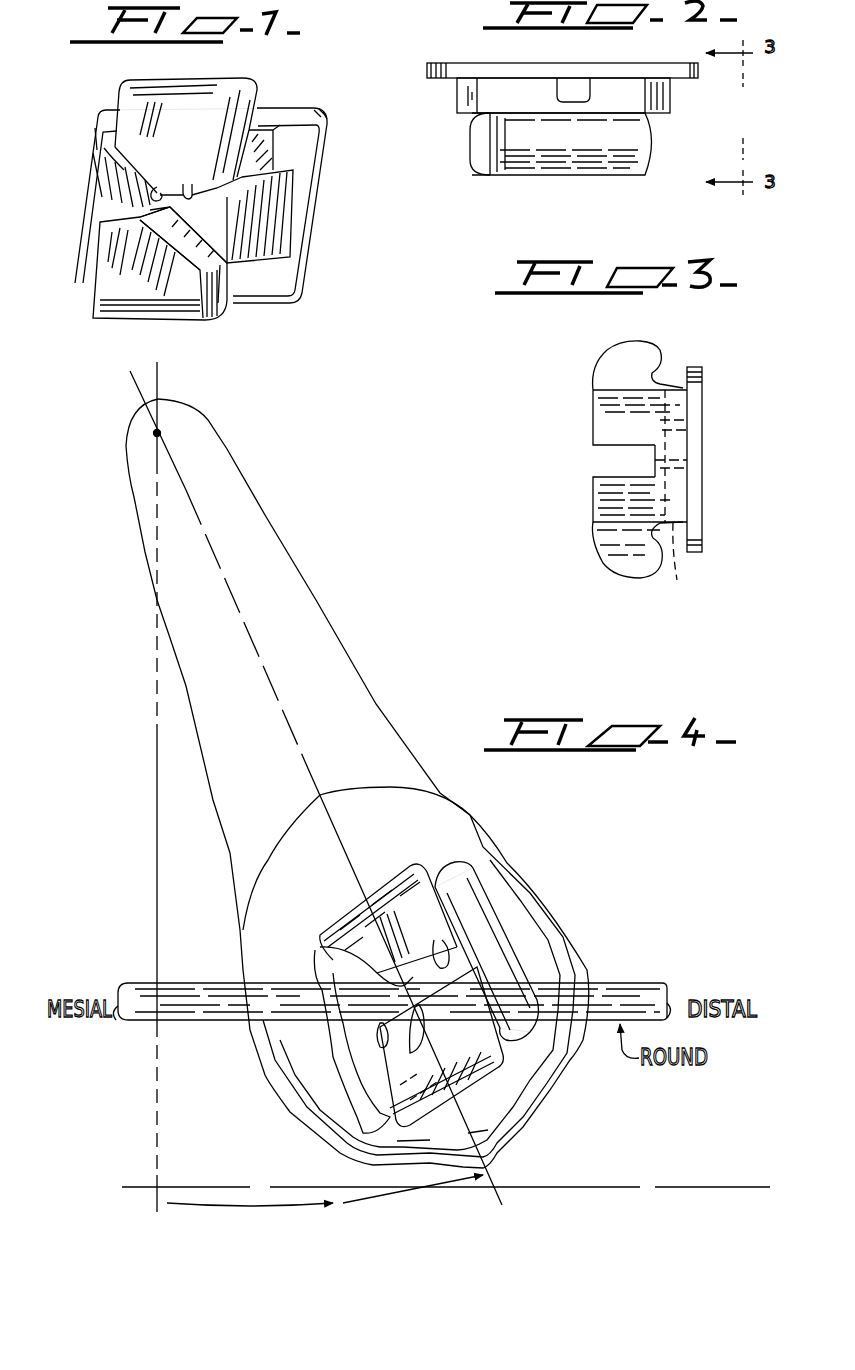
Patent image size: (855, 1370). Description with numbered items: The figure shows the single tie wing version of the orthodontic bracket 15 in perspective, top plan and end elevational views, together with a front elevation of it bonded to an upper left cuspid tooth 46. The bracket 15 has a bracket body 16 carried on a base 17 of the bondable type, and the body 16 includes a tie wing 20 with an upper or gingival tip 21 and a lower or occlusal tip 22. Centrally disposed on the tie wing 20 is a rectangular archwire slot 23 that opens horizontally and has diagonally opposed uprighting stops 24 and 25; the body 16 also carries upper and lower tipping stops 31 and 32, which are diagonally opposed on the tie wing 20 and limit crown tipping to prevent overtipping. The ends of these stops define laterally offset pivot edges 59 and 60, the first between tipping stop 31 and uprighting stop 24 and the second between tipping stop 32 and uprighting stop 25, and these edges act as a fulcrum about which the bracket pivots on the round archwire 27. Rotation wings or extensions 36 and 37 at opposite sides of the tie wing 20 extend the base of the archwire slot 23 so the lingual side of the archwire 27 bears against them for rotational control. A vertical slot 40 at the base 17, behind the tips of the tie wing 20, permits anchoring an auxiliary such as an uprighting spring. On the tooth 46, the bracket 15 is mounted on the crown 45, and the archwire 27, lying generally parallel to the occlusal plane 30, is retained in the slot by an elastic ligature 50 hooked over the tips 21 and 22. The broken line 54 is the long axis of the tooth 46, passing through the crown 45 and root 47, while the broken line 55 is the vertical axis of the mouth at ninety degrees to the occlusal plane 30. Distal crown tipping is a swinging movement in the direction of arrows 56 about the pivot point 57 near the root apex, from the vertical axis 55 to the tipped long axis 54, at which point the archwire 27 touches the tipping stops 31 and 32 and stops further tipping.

In FIG. 1, the single tie wing bracket 15 is at (270, 100).
In FIG. 4, the single tie wing bracket 15 is at (468, 858).
In FIG. 1, the bracket body 16 is at (254, 156).
In FIG. 2, the bracket body 16 is at (480, 95).
In FIG. 1, the base 17 is at (298, 159).
In FIG. 2, the base 17 is at (467, 65).
In FIG. 3, the base 17 is at (702, 378).
In FIG. 1, the tie wing 20 is at (112, 278).
In FIG. 2, the tie wing 20 is at (488, 166).
In FIG. 1, the upper or gingival tip 21 is at (180, 96).
In FIG. 2, the upper or gingival tip 21 is at (633, 153).
In FIG. 3, the upper or gingival tip 21 is at (610, 357).
In FIG. 4, the upper or gingival tip 21 is at (397, 888).
In FIG. 1, the lower or occlusal tip 22 is at (147, 320).
In FIG. 3, the lower or occlusal tip 22 is at (605, 563).
In FIG. 4, the lower or occlusal tip 22 is at (470, 1074).
In FIG. 3, the archwire slot 23 is at (612, 466).
In FIG. 1, the uprighting stop 24 is at (189, 188).
In FIG. 3, the uprighting stop 24 is at (600, 447).
In FIG. 4, the uprighting stop 24 is at (434, 945).
In FIG. 1, the uprighting stop 25 is at (117, 220).
In FIG. 4, the uprighting stop 25 is at (389, 1048).
In FIG. 4, the round archwire 27 is at (617, 992).
In FIG. 4, the occlusal plane 30 is at (530, 1187).
In FIG. 1, the upper tipping stop 31 is at (120, 160).
In FIG. 4, the upper tipping stop 31 is at (333, 1023).
In FIG. 1, the lower tipping stop 32 is at (197, 257).
In FIG. 3, the lower tipping stop 32 is at (617, 497).
In FIG. 4, the lower tipping stop 32 is at (500, 1026).
In FIG. 1, the rotation wing or extension 36 is at (113, 185).
In FIG. 1, the rotation wing or extension 37 is at (260, 210).
In FIG. 2, the vertical slot 40 is at (572, 80).
In FIG. 3, the vertical slot 40 is at (676, 561).
In FIG. 4, the crown 45 is at (400, 800).
In FIG. 4, the tooth 46 is at (390, 713).
In FIG. 4, the root 47 is at (255, 528).
In FIG. 4, the elastic ligature 50 is at (460, 947).
In FIG. 4, the long axis of the tooth 54 is at (217, 570).
In FIG. 4, the vertical axis 55 is at (157, 738).
In FIG. 4, the arrows 56 is at (370, 1197).
In FIG. 4, the pivot point 57 is at (154, 433).
In FIG. 1, the pivot edge 59 is at (158, 186).
In FIG. 4, the pivot edge 59 is at (320, 945).
In FIG. 1, the pivot edge 60 is at (153, 208).
In FIG. 4, the pivot edge 60 is at (418, 1039).